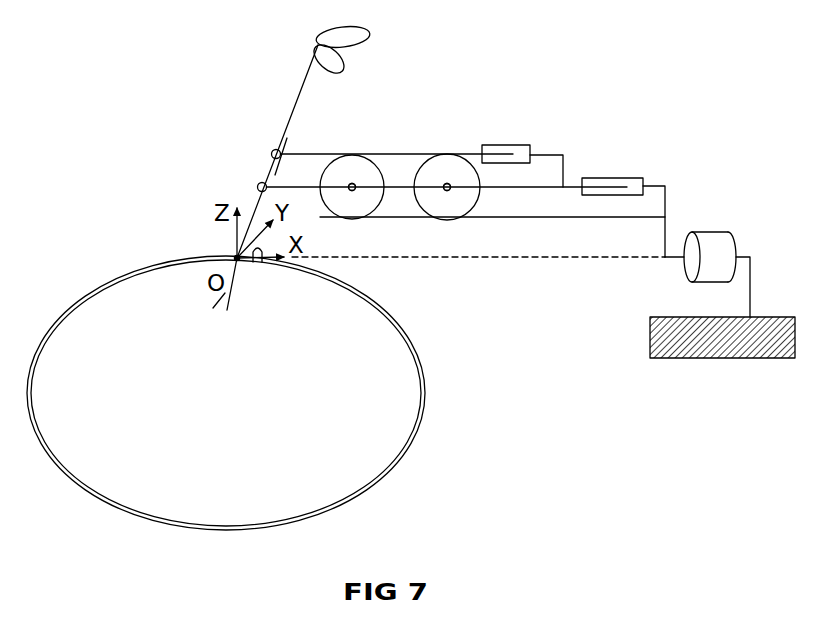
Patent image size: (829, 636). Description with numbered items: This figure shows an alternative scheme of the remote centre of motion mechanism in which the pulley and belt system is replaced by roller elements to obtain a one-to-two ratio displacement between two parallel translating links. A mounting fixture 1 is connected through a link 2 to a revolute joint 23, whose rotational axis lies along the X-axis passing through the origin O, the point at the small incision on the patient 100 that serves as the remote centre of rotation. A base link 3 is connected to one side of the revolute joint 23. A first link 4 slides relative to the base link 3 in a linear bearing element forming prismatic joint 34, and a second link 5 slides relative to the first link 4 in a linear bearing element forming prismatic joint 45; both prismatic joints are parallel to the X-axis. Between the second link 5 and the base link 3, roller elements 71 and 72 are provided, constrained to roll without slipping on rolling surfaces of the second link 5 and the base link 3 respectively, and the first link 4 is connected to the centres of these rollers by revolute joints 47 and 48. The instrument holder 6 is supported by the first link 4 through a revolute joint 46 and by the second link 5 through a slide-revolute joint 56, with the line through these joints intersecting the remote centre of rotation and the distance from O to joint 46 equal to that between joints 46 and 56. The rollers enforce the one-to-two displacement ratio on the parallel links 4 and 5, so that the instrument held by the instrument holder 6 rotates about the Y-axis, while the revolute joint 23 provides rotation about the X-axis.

The patient 100 is at (235, 436).
The instrument holder 6 is at (297, 93).
The slide-revolute joint 56 is at (272, 153).
The revolute joint 46 is at (258, 189).
The second link 5 is at (389, 147).
The first link 4 is at (512, 186).
The base link 3 is at (533, 217).
The roller element 71 is at (333, 177).
The roller element 72 is at (427, 173).
The revolute joint 47 is at (350, 190).
The revolute joint 48 is at (445, 190).
The prismatic joint 45 is at (502, 145).
The prismatic joint 34 is at (593, 178).
The revolute joint 23 is at (700, 230).
The link 2 is at (766, 270).
The mounting fixture 1 is at (650, 338).